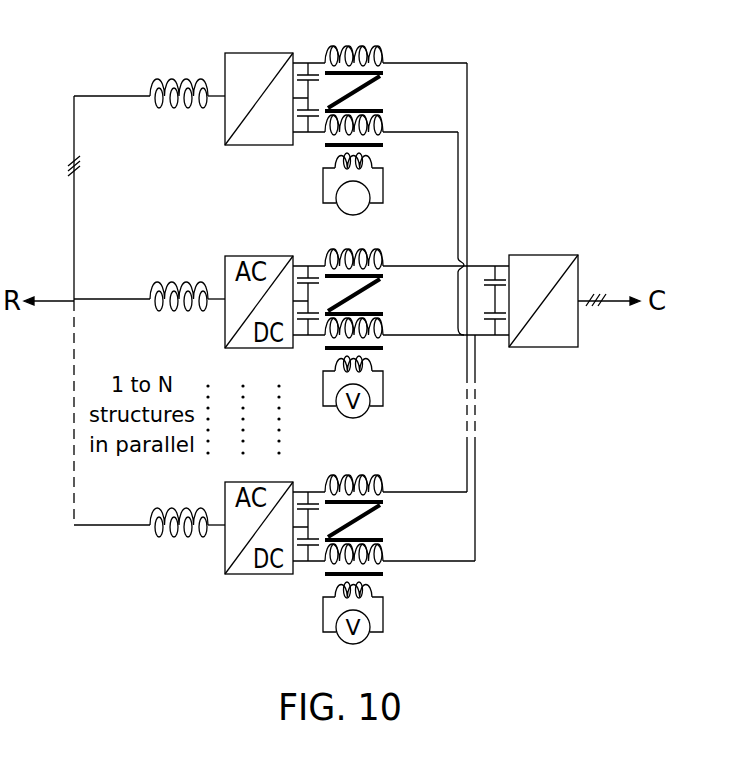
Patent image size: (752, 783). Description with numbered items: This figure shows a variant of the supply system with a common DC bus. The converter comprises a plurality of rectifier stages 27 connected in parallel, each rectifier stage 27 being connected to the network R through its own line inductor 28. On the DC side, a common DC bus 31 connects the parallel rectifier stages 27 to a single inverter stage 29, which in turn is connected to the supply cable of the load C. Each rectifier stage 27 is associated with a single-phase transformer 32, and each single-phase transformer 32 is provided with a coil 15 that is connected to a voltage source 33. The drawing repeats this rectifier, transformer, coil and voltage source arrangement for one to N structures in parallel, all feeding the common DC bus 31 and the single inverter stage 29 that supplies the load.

The coil 15 is at (373, 163).
The rectifier stage 27 is at (236, 168).
The line inductor 28 is at (170, 101).
The inverter stage 29 is at (572, 255).
The DC bus 31 is at (488, 247).
The single-phase transformer 32 is at (409, 45).
The voltage source 33 is at (330, 226).